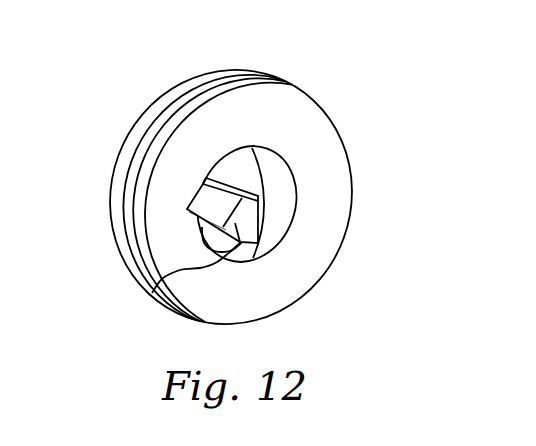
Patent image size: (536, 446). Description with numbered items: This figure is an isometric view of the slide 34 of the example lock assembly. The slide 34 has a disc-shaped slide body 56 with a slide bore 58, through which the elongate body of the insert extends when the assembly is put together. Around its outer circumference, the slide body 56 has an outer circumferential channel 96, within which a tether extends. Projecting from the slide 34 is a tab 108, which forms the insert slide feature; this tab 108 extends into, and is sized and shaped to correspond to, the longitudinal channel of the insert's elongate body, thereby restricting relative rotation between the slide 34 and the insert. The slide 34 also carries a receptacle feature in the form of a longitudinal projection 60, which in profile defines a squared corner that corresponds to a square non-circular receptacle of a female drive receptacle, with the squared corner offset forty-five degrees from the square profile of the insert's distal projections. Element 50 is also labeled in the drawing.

The slide 34 is at (252, 191).
The outer circumferential channel 96 is at (140, 153).
The slide body 56 is at (350, 231).
The slide bore 58 is at (283, 190).
The key member 50 is at (242, 186).
The longitudinal projection 60 is at (155, 292).
The tab 108 is at (258, 227).